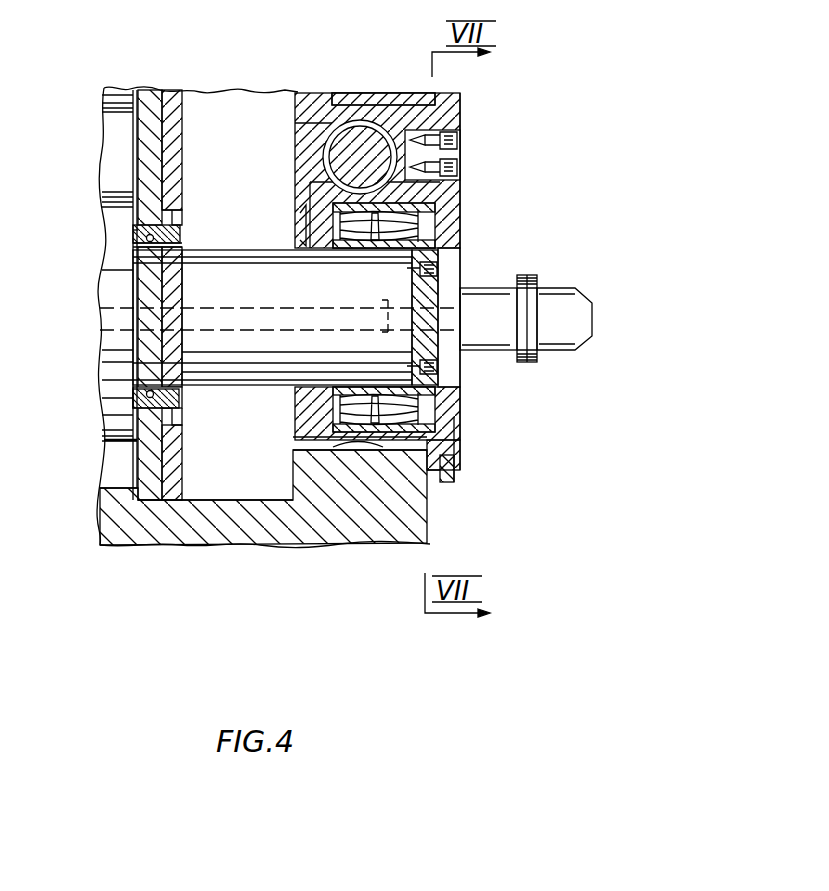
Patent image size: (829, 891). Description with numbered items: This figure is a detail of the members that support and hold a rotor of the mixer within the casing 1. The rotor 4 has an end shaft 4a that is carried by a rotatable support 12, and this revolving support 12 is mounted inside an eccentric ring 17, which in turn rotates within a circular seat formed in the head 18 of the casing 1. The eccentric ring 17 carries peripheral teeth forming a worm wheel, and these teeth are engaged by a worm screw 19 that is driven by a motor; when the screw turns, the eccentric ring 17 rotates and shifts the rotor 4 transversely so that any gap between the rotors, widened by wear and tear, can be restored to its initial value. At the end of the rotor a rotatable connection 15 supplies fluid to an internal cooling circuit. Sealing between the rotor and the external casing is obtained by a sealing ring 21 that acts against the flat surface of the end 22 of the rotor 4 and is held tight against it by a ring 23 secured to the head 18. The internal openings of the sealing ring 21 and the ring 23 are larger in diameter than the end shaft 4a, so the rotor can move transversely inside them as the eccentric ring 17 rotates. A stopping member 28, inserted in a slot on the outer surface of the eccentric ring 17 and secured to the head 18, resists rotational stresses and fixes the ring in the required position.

The casing 1 is at (98, 543).
The rotor 4 is at (96, 362).
The shaft 4a is at (244, 367).
The rotatable support 12 is at (474, 184).
The rotatable connection 15 is at (557, 310).
The eccentric ring 17 is at (298, 200).
The head 18 is at (370, 538).
The worm screw 19 is at (298, 127).
The sealing ring 21 is at (133, 231).
The end 22 is at (133, 447).
The ring 23 is at (181, 233).
The stopping member 28 is at (455, 473).